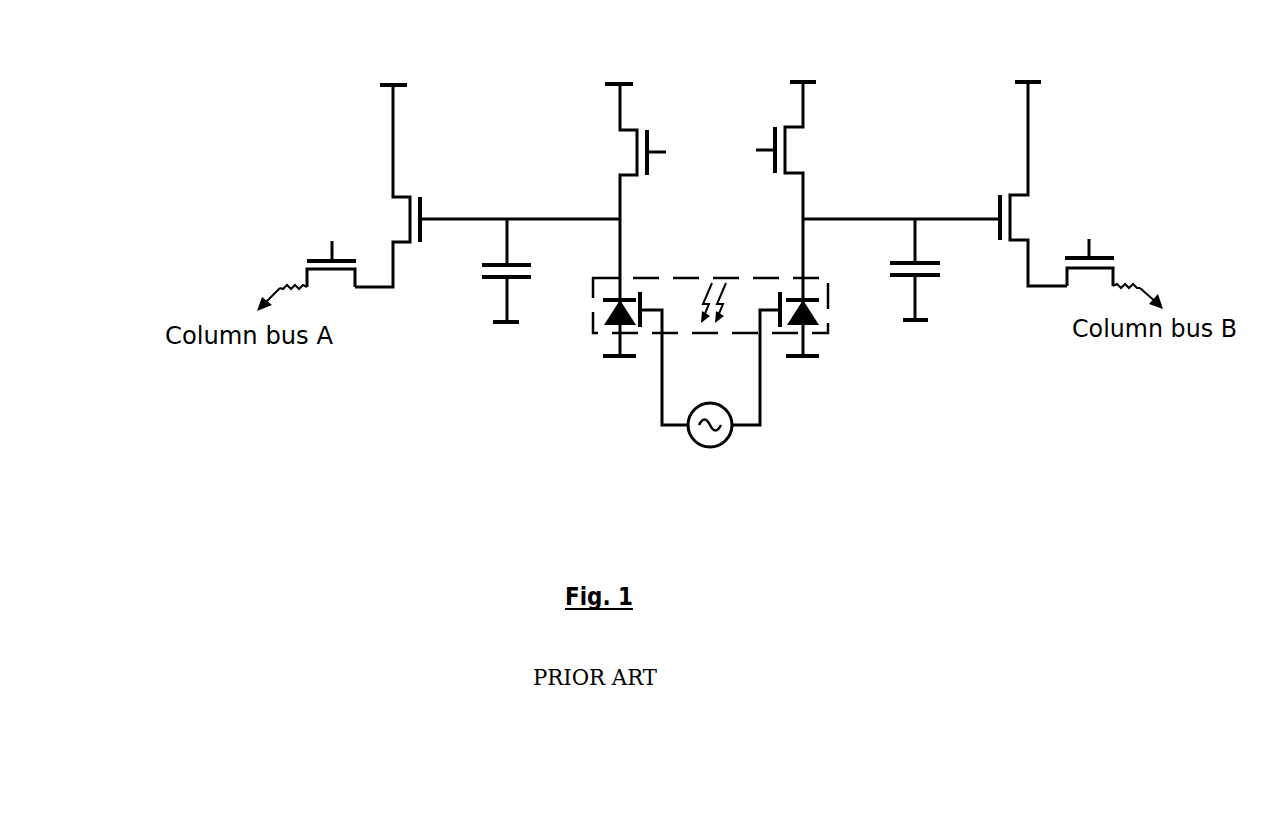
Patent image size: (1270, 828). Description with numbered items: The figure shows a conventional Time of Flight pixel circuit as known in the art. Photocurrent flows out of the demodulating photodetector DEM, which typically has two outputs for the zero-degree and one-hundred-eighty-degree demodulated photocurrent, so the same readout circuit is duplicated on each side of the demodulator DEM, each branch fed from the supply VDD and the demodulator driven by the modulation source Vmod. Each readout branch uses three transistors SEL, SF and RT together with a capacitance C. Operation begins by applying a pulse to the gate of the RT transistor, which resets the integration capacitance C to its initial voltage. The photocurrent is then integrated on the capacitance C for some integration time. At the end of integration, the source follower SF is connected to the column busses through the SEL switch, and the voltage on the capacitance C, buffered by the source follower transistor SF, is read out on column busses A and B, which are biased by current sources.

The supply voltage VDD is at (710, 71).
The source follower transistor SF is at (711, 184).
The SEL switch SEL is at (710, 251).
The capacitance C is at (712, 270).
The RT transistor RT is at (711, 219).
The demodulating photodetector DEM is at (736, 309).
The modulation voltage source Vmod is at (710, 378).